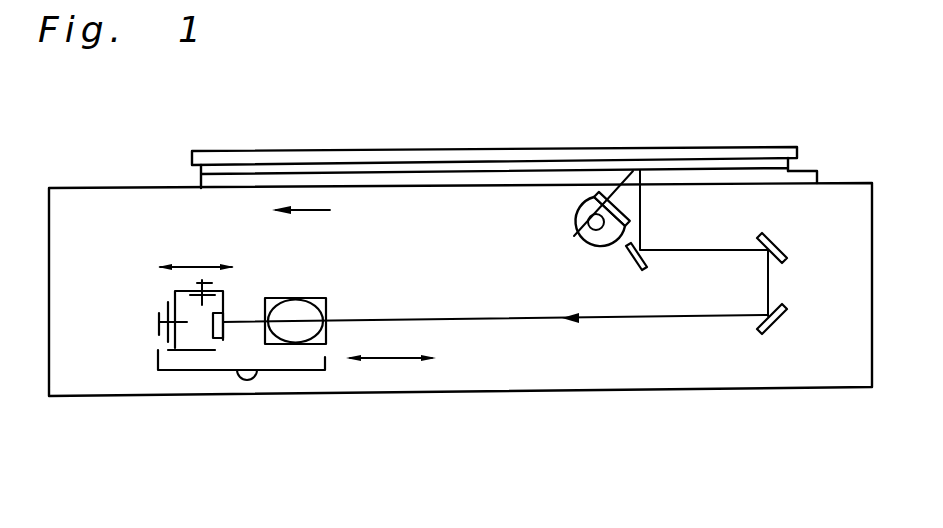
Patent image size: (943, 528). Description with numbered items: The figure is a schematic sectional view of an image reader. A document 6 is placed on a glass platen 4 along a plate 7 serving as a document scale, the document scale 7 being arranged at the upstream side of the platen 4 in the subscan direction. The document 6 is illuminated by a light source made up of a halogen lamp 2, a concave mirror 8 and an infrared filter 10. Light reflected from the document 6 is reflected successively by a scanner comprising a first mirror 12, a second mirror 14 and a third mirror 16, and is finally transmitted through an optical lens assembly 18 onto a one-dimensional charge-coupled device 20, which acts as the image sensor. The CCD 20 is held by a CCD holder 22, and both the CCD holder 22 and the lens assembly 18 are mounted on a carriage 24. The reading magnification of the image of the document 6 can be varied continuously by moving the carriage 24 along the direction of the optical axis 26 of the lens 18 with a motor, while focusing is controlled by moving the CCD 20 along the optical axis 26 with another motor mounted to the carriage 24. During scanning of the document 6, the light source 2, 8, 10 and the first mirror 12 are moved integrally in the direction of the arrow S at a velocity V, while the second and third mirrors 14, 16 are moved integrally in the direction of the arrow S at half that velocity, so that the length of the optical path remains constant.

The halogen lamp 2 is at (574, 236).
The glass platen 4 is at (471, 187).
The document 6 is at (527, 170).
The plate for a document scale 7 is at (800, 171).
The concave mirror 8 is at (575, 212).
The infrared filter 10 is at (604, 193).
The first mirror 12 is at (643, 272).
The second mirror 14 is at (767, 237).
The third mirror 16 is at (777, 320).
The optical lens assembly 18 is at (293, 330).
The one-dimensional charge-coupled device 20 is at (205, 338).
The CCD holder 22 is at (160, 337).
The carriage 24 is at (323, 370).
The optical axis 26 is at (418, 320).
The arrow S is at (305, 210).